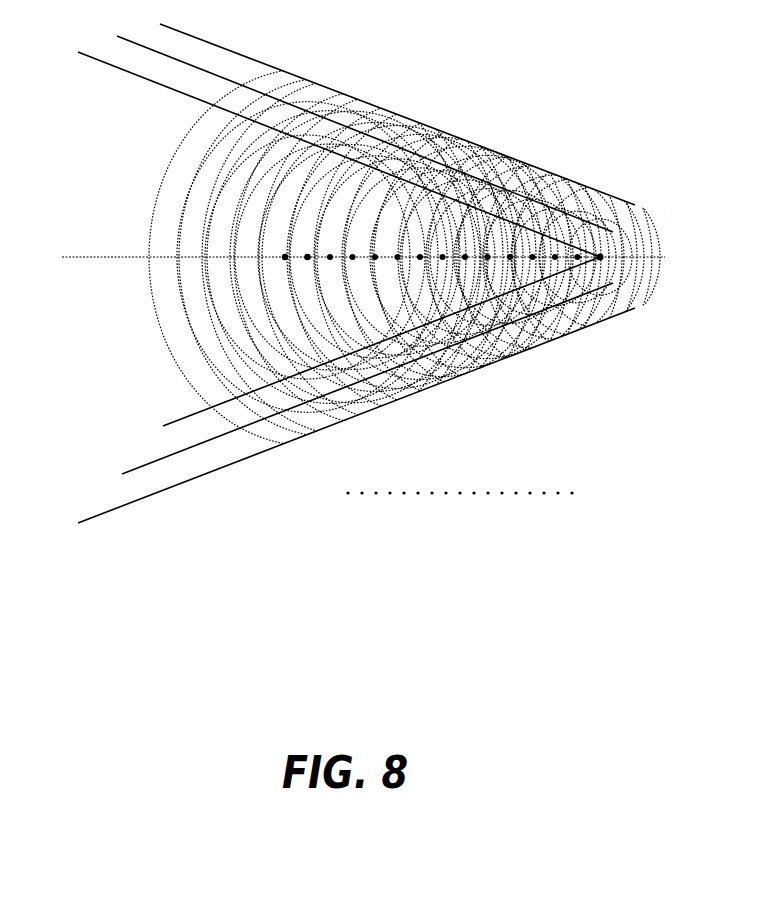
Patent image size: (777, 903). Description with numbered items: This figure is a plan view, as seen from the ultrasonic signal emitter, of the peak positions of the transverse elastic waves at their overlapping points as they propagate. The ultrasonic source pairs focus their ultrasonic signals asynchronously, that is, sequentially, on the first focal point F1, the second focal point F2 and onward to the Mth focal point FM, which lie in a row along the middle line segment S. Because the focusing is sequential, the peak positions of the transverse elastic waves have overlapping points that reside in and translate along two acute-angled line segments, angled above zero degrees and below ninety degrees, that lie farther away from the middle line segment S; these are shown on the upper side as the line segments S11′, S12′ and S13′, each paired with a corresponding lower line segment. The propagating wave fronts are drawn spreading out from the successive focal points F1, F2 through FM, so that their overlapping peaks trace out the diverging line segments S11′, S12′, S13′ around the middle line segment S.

The middle line segment S is at (352, 258).
The acute-angled line segment S11′ is at (322, 147).
The acute-angled line segment S12′ is at (348, 127).
The acute-angled line segment S13′ is at (380, 107).
The first focal point F1 is at (286, 262).
The second focal point F2 is at (309, 262).
The Mth focal point FM is at (601, 262).